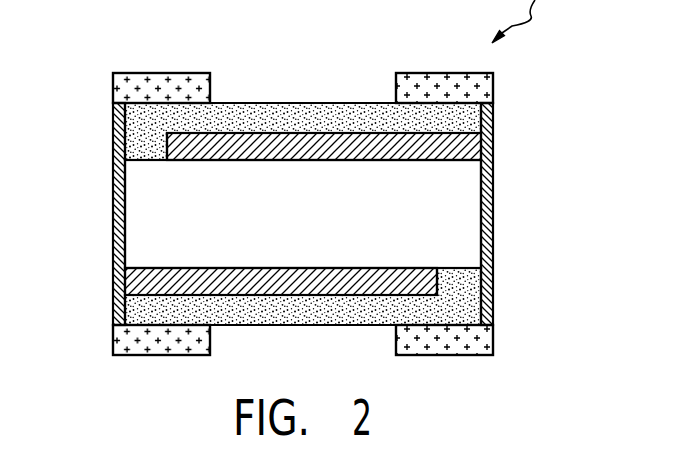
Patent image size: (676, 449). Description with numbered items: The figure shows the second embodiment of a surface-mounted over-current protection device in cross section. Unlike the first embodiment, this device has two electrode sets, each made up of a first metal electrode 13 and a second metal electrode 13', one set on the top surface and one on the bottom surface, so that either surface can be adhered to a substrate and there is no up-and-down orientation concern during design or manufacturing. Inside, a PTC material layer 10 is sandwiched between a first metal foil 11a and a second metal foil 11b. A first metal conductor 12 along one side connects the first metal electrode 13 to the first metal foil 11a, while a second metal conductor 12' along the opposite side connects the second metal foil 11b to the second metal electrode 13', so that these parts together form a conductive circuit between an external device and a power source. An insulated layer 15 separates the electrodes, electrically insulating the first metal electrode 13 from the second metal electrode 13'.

The PTC material layer 10 is at (143, 192).
The first metal foil 11a is at (352, 135).
The second metal foil 11b is at (345, 290).
The first metal conductor 12 is at (517, 214).
The second metal conductor 12' is at (87, 214).
The first metal electrode 13 is at (475, 214).
The second metal electrode 13' is at (130, 212).
The insulated layer 15 is at (300, 122).